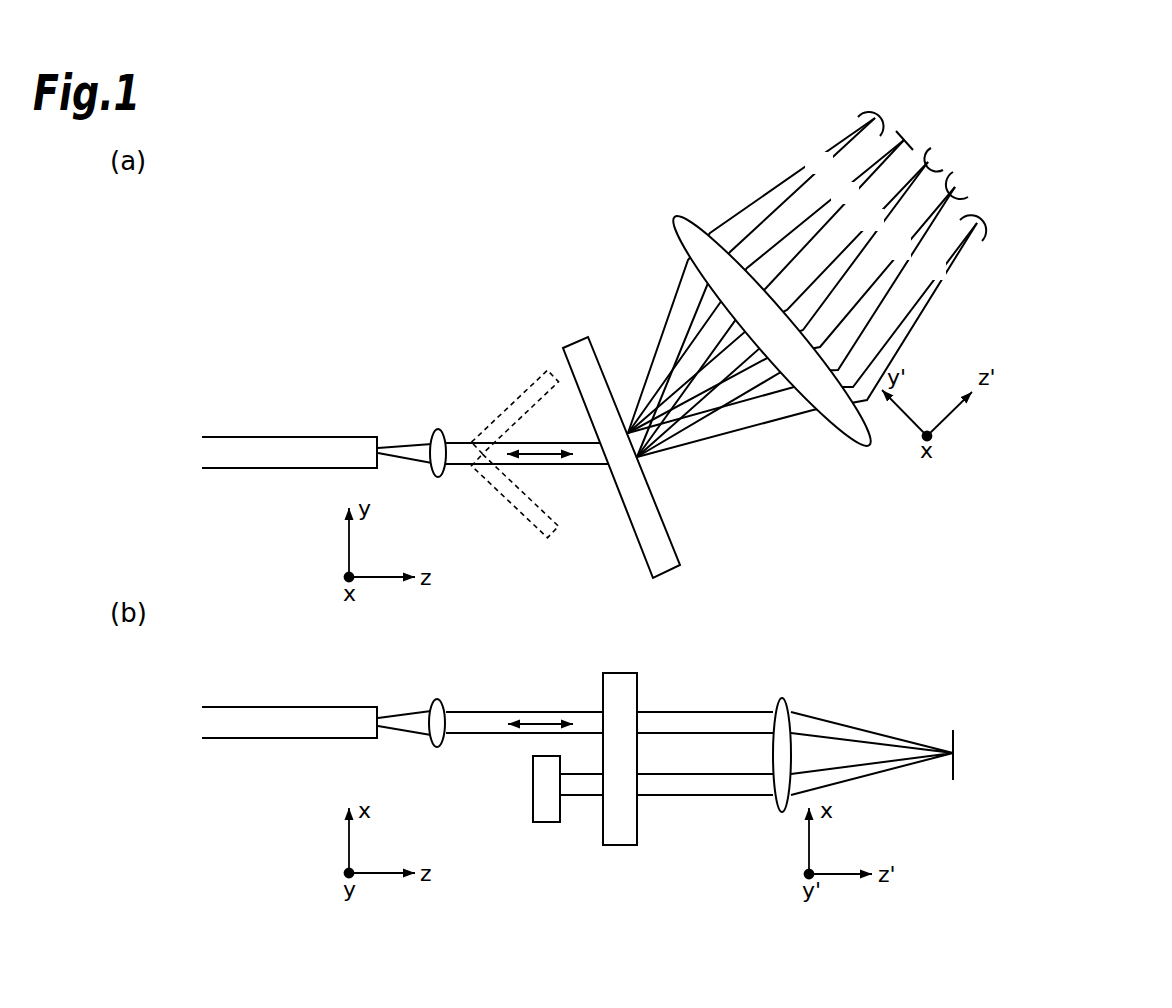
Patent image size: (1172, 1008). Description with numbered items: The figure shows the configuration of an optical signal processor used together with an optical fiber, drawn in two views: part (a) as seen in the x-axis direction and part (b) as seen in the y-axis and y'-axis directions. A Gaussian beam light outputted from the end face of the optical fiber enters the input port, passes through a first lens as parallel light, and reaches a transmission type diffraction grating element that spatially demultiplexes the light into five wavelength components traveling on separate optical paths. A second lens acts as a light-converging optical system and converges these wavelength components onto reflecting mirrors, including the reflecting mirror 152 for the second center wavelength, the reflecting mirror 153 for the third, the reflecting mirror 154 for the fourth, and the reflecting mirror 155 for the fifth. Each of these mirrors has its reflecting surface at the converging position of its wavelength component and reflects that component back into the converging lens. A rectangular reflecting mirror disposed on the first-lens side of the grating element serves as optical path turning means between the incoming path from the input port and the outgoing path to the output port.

The reflecting mirror 152 is at (912, 142).
The reflecting mirror 153 is at (943, 165).
The reflecting mirror 154 is at (972, 192).
The reflecting mirror 155 is at (983, 237).